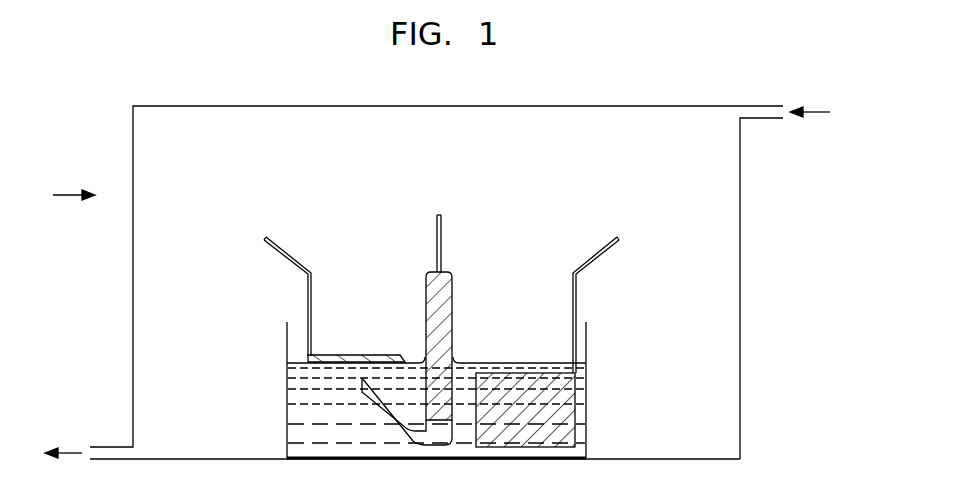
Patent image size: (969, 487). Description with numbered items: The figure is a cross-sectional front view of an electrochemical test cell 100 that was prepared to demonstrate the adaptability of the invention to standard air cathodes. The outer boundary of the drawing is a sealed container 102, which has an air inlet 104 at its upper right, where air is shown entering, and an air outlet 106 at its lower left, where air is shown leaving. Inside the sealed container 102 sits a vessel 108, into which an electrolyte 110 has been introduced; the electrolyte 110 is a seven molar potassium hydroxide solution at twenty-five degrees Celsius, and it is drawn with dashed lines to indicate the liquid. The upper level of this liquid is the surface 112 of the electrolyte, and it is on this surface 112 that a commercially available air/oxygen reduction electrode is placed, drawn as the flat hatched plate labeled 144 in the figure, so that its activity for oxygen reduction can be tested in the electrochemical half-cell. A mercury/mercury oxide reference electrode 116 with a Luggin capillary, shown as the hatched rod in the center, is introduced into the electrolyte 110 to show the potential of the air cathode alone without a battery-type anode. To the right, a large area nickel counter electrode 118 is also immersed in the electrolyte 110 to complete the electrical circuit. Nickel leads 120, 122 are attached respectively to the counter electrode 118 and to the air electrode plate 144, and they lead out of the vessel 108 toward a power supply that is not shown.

The electrochemical test cell 100 is at (74, 183).
The sealed container 102 is at (133, 272).
The air inlet 104 is at (776, 119).
The air outlet 106 is at (100, 447).
The vessel 108 is at (587, 355).
The electrolyte 110 is at (297, 415).
The surface of the electrolyte 112 is at (504, 360).
The mercury/mercury oxide reference electrode 116 is at (453, 290).
The nickel counter electrode 118 is at (571, 410).
The nickel lead 120 is at (583, 262).
The nickel lead 122 is at (291, 250).
The sensing electrode 144 is at (358, 354).